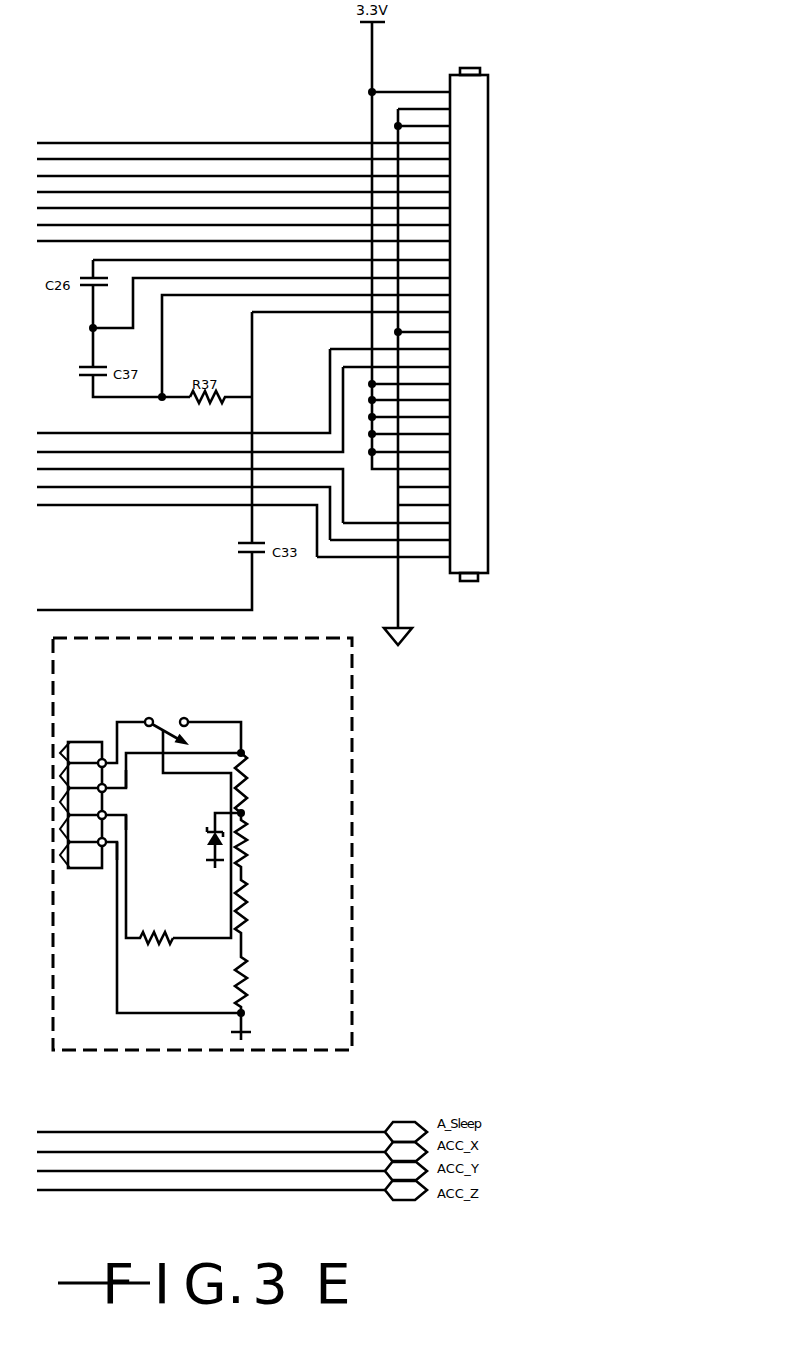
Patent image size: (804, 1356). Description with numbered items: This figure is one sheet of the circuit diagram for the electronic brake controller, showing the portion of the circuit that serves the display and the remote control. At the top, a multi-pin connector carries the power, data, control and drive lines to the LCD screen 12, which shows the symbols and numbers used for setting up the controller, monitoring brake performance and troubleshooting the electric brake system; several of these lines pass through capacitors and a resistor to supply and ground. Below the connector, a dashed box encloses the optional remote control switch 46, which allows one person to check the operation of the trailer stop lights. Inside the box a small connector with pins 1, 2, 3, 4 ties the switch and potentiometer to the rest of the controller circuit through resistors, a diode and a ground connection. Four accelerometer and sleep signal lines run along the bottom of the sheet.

The LCD screen 12 is at (490, 583).
The remote control switch 46 is at (202, 844).
The remote connector pin 1 is at (111, 744).
The remote connector pin 2 is at (101, 781).
The remote connector pin 3 is at (101, 814).
The remote connector pin 4 is at (97, 843).